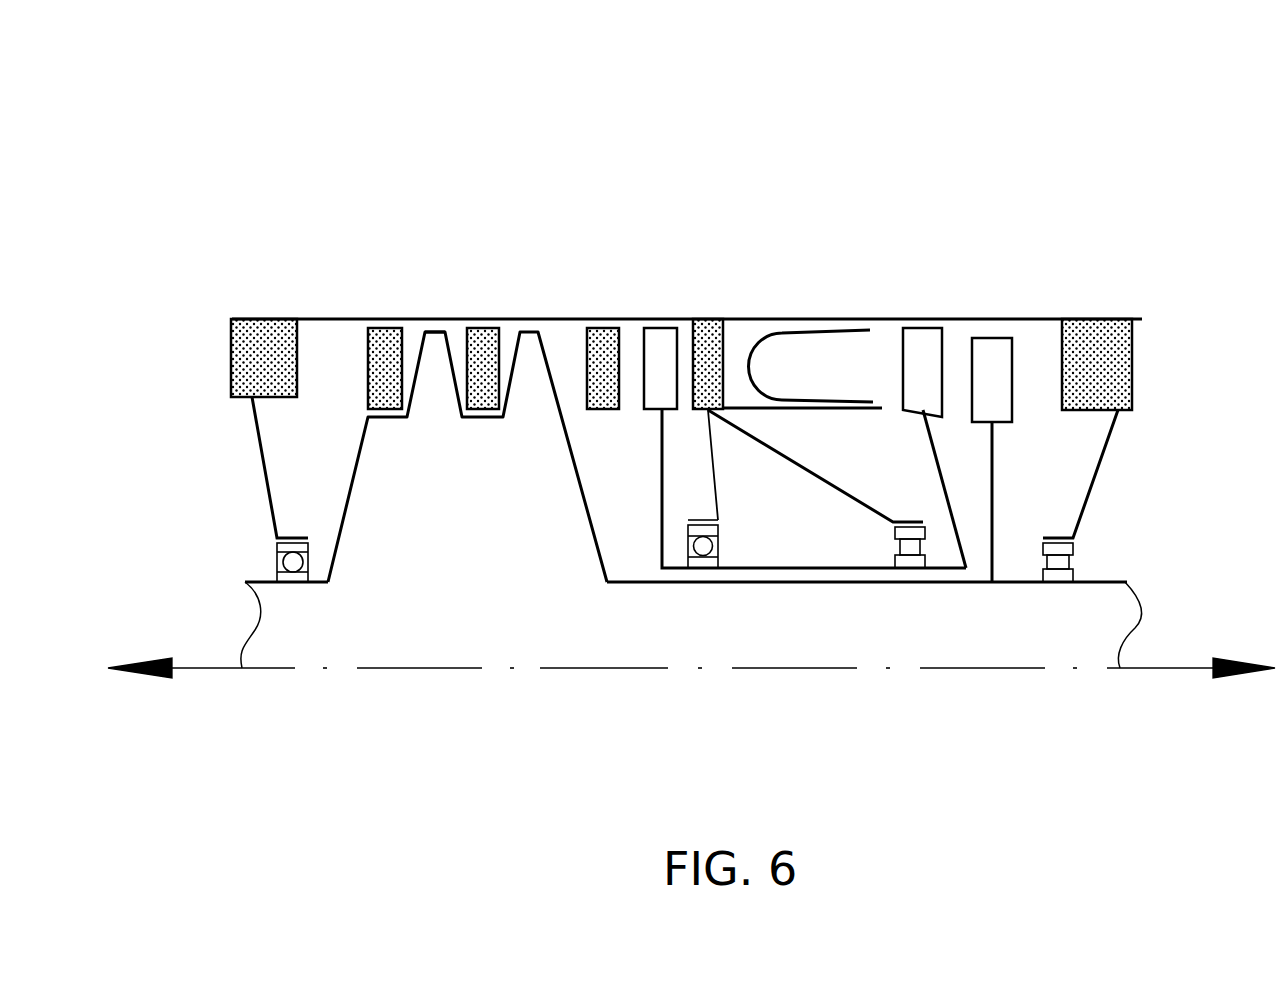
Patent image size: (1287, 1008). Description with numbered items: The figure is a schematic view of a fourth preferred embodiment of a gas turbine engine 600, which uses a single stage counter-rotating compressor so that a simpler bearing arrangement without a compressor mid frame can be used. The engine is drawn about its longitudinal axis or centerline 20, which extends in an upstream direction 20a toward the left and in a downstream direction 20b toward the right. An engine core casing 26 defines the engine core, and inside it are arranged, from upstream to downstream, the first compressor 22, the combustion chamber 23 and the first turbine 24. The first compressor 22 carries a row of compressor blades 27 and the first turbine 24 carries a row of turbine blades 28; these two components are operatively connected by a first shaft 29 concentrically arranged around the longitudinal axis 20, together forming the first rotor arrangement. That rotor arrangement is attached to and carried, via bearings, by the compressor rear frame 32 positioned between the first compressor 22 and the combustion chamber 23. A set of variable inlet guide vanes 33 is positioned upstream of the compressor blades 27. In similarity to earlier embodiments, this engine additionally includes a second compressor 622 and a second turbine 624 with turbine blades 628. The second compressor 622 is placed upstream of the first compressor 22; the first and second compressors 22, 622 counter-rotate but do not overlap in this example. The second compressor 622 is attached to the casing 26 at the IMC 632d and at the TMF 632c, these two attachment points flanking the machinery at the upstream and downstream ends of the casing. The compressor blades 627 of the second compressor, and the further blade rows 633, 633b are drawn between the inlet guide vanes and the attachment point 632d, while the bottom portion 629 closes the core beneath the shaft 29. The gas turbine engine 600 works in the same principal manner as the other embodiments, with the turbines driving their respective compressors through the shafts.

The gas turbine engine 600 is at (1137, 140).
The compressor 22 is at (622, 300).
The IMC 632d is at (240, 353).
The casing 26 is at (322, 318).
The second compressor 622 is at (446, 540).
The compressor blades 627 is at (432, 337).
The magnet block 633 is at (384, 340).
The magnet block 633b is at (478, 340).
The variable inlet guide vanes 33 is at (603, 335).
The compressor blades 27 is at (660, 337).
The compressor rear frame 32 is at (710, 332).
The combustion chamber 23 is at (835, 350).
The shaft 29 is at (832, 570).
The turbine blades 28 is at (928, 340).
The turbine 24 is at (969, 290).
The turbine blades 628 is at (988, 352).
The second turbine 624 is at (1058, 298).
The TMF 632c is at (1123, 358).
The bottom plate 629 is at (955, 582).
The longitudinal axis 20 is at (598, 668).
The upstream direction 20a is at (198, 668).
The downstream direction 20b is at (1185, 668).